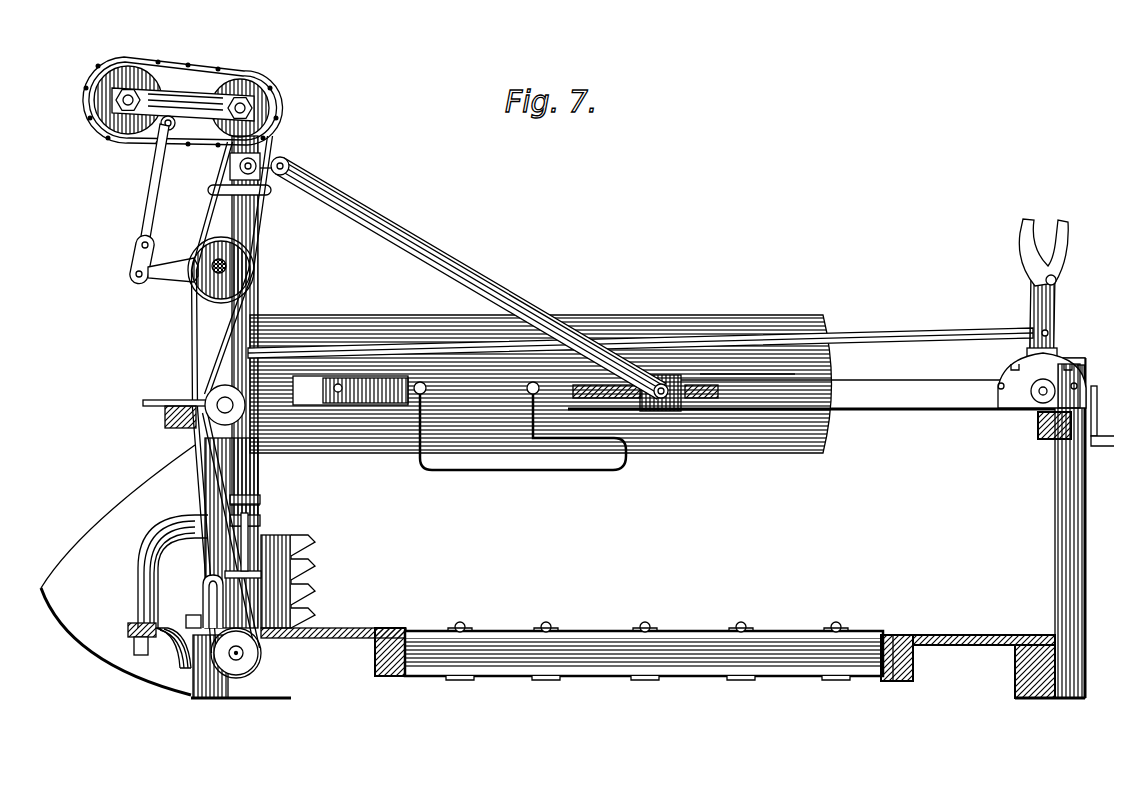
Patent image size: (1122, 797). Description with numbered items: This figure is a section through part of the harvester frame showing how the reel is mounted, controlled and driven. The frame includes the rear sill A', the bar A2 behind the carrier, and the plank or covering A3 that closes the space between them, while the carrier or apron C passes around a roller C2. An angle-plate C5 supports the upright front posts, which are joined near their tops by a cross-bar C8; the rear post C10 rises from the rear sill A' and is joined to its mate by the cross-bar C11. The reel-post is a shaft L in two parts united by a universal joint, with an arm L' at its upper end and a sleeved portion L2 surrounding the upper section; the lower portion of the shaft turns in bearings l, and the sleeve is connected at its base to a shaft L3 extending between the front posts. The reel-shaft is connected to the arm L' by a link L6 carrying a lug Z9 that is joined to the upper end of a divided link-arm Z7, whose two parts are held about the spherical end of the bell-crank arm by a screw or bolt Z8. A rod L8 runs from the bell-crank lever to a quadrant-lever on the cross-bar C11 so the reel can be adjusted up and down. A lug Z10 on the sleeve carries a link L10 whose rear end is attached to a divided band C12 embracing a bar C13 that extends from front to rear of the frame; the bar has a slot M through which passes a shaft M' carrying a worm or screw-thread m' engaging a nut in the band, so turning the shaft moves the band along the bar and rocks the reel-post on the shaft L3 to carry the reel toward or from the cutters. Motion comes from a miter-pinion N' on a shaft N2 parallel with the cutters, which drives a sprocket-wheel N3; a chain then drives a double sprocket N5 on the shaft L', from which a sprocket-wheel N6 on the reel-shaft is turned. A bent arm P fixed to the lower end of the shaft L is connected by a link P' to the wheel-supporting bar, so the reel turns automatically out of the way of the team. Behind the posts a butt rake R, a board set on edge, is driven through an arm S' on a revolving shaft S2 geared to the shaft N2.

The link L6 is at (170, 92).
The arm L' is at (209, 94).
The sprocket-wheel N6 is at (128, 100).
The double sprocket N5 is at (270, 113).
The lug Z9 is at (168, 123).
The lug Z10 is at (281, 160).
The link L10 is at (378, 228).
The divided link-arm Z7 is at (142, 184).
The screw or bolt Z8 is at (128, 240).
The sleeved portion L2 is at (252, 242).
The miter-pinion N' is at (221, 270).
The shaft L3 is at (180, 273).
The bearings l is at (250, 493).
The cross-bar C8 is at (158, 411).
The shaft L is at (245, 331).
The roller C2 is at (814, 616).
The bent arm P is at (124, 570).
The link P' is at (167, 651).
The butt rake R is at (274, 534).
The arm S' is at (243, 545).
The revolving shaft S2 is at (210, 591).
The shaft N2 is at (236, 645).
The sprocket-wheel N3 is at (242, 660).
The angle-plate C5 is at (190, 692).
The slot M is at (843, 397).
The shaft M' is at (701, 433).
The worm or screw-thread m' is at (537, 431).
The divided band C12 is at (655, 373).
The rod L8 is at (880, 323).
The bar C13 is at (652, 384).
The cross-bar C11 is at (1030, 420).
The post C10 is at (1082, 522).
The carrier or apron C is at (507, 626).
The plank or covering A3 is at (984, 625).
The bar A2 is at (905, 664).
The rear sill A' is at (1035, 671).